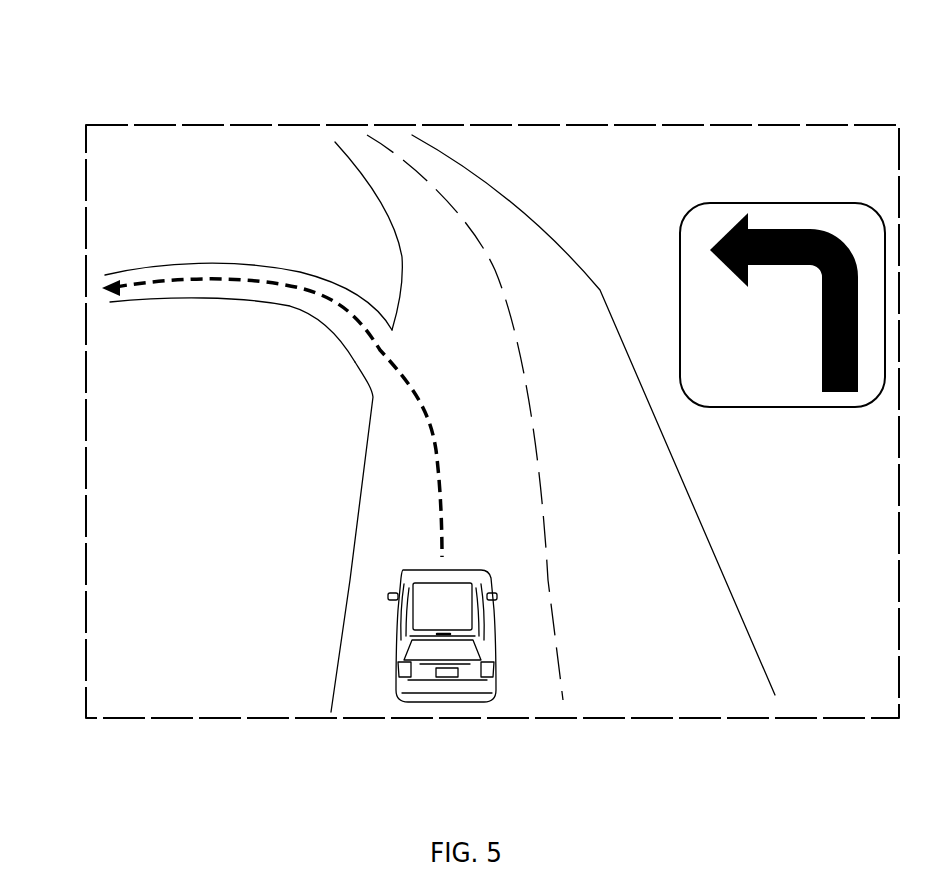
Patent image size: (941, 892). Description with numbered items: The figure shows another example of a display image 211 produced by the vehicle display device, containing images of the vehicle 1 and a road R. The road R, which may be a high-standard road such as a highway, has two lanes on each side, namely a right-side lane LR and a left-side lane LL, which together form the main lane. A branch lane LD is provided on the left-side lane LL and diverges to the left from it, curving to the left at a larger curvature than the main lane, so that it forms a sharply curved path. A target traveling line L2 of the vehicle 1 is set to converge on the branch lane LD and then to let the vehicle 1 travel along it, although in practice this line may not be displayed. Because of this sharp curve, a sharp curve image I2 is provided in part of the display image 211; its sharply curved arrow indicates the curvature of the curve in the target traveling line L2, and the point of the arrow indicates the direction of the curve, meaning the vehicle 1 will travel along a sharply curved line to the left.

The display image 211 is at (163, 114).
The branch lane LD is at (207, 268).
The target traveling line L2 is at (333, 315).
The road R is at (582, 197).
The left-side lane LL is at (397, 530).
The right-side lane LR is at (618, 532).
The sharp curve image I2 is at (830, 198).
The vehicle 1 is at (428, 687).